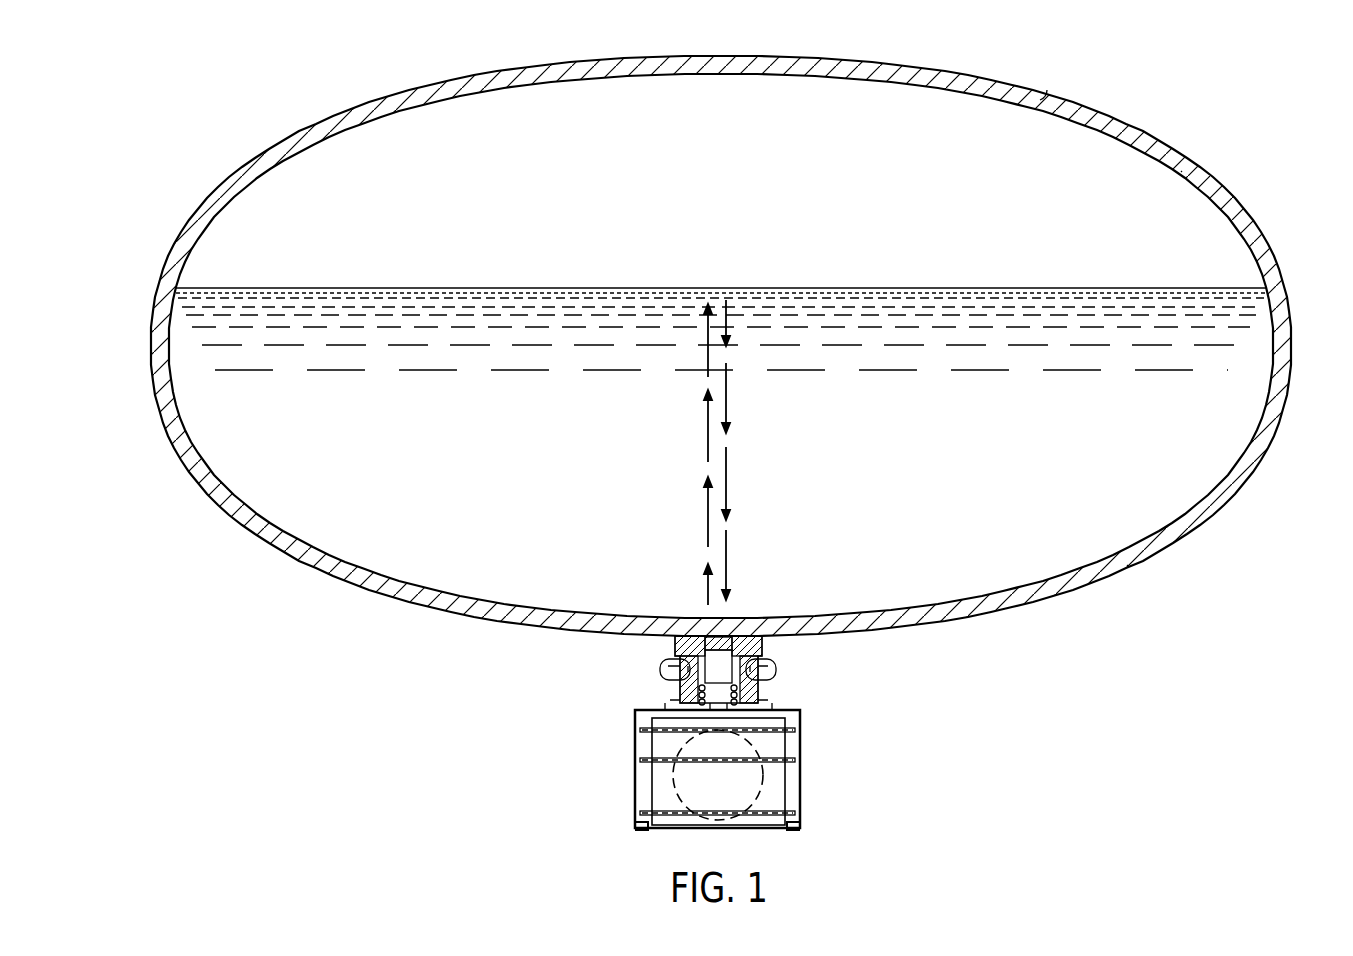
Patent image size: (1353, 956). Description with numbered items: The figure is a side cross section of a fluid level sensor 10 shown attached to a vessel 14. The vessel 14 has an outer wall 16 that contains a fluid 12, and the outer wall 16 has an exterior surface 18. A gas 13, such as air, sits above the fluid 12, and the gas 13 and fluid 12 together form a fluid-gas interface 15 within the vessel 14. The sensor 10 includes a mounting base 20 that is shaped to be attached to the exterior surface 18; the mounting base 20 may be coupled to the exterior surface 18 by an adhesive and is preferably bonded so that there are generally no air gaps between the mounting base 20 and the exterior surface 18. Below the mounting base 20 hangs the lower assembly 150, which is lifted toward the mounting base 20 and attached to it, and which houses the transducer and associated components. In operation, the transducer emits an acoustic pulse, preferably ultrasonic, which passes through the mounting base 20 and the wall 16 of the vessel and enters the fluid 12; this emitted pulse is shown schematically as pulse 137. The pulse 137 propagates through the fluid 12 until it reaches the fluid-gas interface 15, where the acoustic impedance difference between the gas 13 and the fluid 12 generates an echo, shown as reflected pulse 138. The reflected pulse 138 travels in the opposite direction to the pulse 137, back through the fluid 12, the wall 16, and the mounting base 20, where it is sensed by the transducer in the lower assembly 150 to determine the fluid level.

The fluid level sensor 10 is at (580, 809).
The fluid 12 is at (1262, 360).
The gas 13 is at (887, 100).
The vessel 14 is at (1043, 101).
The fluid-gas interface 15 is at (583, 287).
The outer wall 16 is at (1180, 171).
The exterior surface 18 is at (1127, 565).
The mounting base 20 is at (762, 650).
The pulse 137 is at (708, 515).
The reflected pulse 138 is at (727, 547).
The lower assembly 150 is at (821, 673).